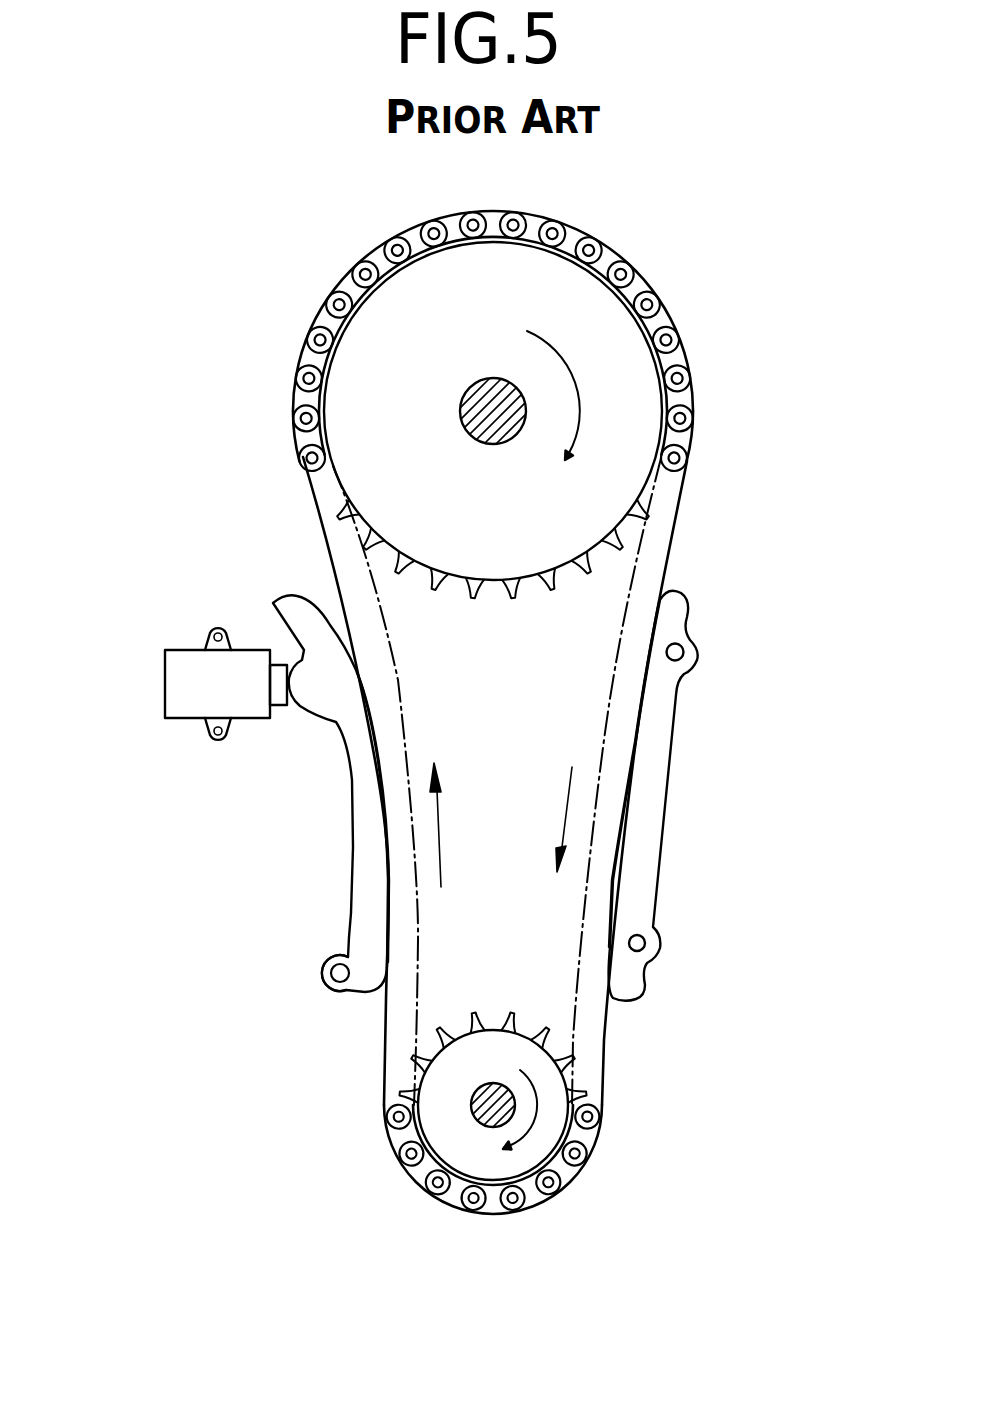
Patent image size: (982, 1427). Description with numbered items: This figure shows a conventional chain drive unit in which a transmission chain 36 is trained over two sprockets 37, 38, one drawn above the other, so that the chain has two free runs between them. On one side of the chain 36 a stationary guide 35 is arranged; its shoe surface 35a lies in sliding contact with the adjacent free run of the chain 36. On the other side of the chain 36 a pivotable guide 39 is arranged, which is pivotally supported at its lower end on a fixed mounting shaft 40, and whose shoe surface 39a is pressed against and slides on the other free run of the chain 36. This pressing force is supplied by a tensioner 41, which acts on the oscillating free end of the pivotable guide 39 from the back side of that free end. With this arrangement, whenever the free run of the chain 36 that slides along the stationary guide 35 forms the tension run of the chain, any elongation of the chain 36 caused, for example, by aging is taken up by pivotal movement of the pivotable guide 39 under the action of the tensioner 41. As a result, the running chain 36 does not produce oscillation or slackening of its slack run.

The stationary guide 35 is at (647, 858).
The shoe surface 35a is at (628, 777).
The transmission chain 36 is at (640, 280).
The sprocket 37 is at (472, 1160).
The sprocket 38 is at (385, 312).
The pivotable guide 39 is at (357, 822).
The shoe surface 39a is at (387, 872).
The fixed mounting shaft 40 is at (333, 973).
The tensioner 41 is at (182, 660).